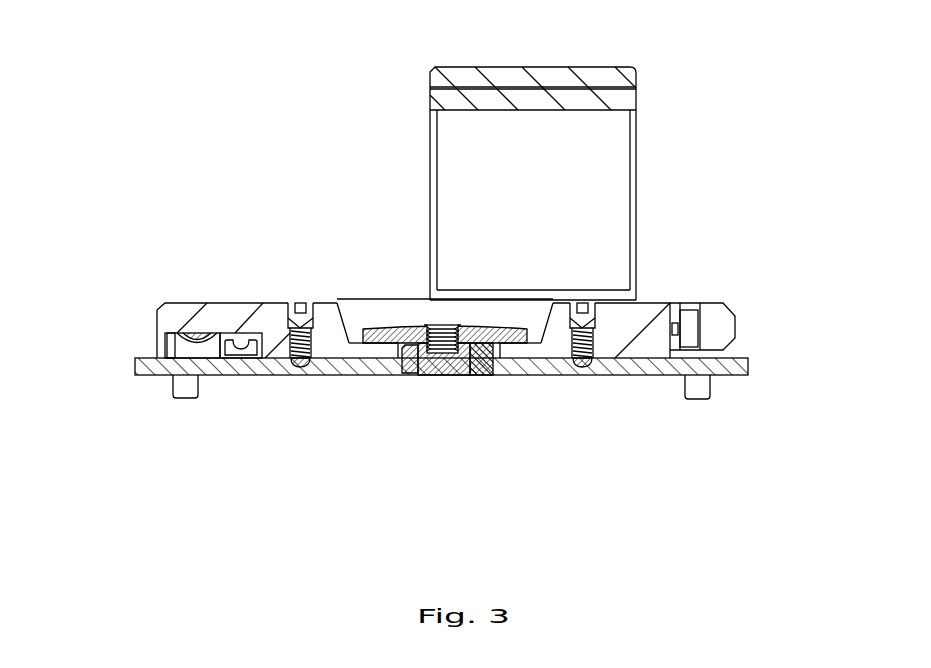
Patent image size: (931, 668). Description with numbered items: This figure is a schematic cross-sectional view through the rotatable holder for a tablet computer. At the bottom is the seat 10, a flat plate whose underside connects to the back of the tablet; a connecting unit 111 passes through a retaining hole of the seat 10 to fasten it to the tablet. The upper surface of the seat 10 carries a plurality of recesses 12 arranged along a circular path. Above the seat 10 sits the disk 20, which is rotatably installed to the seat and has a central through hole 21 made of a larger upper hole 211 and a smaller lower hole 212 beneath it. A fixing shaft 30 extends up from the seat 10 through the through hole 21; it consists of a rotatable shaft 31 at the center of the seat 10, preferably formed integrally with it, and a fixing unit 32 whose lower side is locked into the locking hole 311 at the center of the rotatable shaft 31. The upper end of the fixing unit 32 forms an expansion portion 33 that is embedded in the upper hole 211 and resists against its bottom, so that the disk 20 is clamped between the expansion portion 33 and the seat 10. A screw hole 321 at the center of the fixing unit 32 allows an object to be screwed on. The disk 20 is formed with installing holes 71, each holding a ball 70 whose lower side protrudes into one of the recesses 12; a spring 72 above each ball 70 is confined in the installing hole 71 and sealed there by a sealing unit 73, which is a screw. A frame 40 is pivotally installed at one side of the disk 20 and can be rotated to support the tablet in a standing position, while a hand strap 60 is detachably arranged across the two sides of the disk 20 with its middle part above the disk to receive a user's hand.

The seat 10 is at (140, 368).
The connecting unit 111 is at (173, 390).
The recess 12 is at (303, 370).
The disk 20 is at (157, 320).
The through hole 21 is at (417, 291).
The upper hole 211 is at (345, 343).
The lower hole 212 is at (407, 377).
The fixing shaft 30 is at (453, 442).
The rotatable shaft 31 is at (493, 377).
The locking hole 311 is at (428, 377).
The fixing unit 32 is at (442, 377).
The screw hole 321 is at (447, 323).
The expansion portion 33 is at (393, 327).
The frame 40 is at (732, 312).
The hand strap 60 is at (558, 65).
The ball 70 is at (290, 360).
The installing hole 71 is at (289, 318).
The spring 72 is at (289, 336).
The sealing unit 73 is at (298, 304).